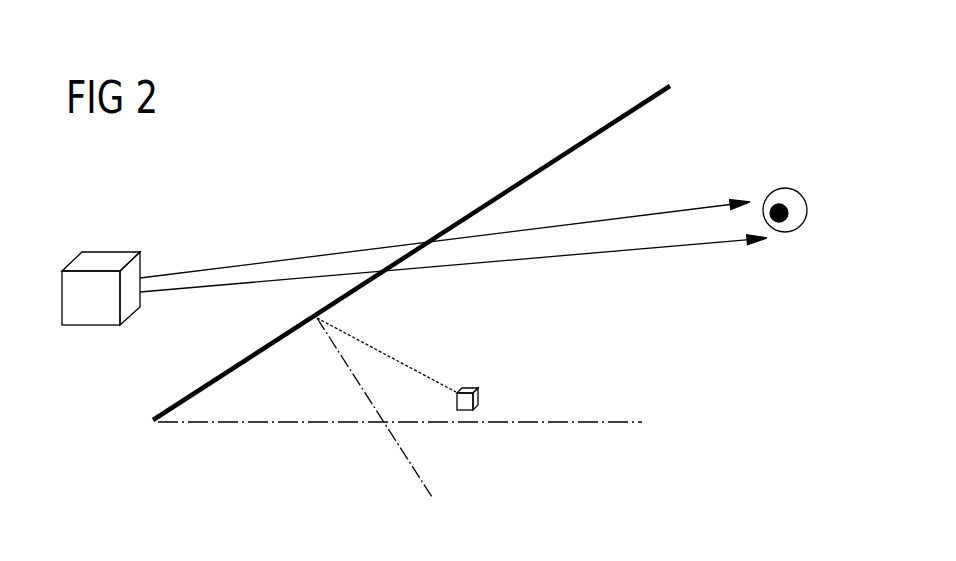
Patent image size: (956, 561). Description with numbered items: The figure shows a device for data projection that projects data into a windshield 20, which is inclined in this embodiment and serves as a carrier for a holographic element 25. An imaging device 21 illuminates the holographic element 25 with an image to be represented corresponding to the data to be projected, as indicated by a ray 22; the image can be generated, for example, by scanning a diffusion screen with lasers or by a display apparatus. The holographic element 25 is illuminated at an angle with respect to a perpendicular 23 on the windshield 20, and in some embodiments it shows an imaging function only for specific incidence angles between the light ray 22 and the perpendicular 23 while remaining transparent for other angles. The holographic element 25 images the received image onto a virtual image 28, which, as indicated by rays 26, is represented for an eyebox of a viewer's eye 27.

The windshield 20 is at (208, 383).
The imaging device 21 is at (468, 387).
The ray 22 is at (414, 368).
The perpendicular 23 is at (368, 400).
The holographic element 25 is at (315, 326).
The rays 26 is at (303, 278).
The viewer's eye 27 is at (787, 188).
The virtual image 28 is at (101, 262).